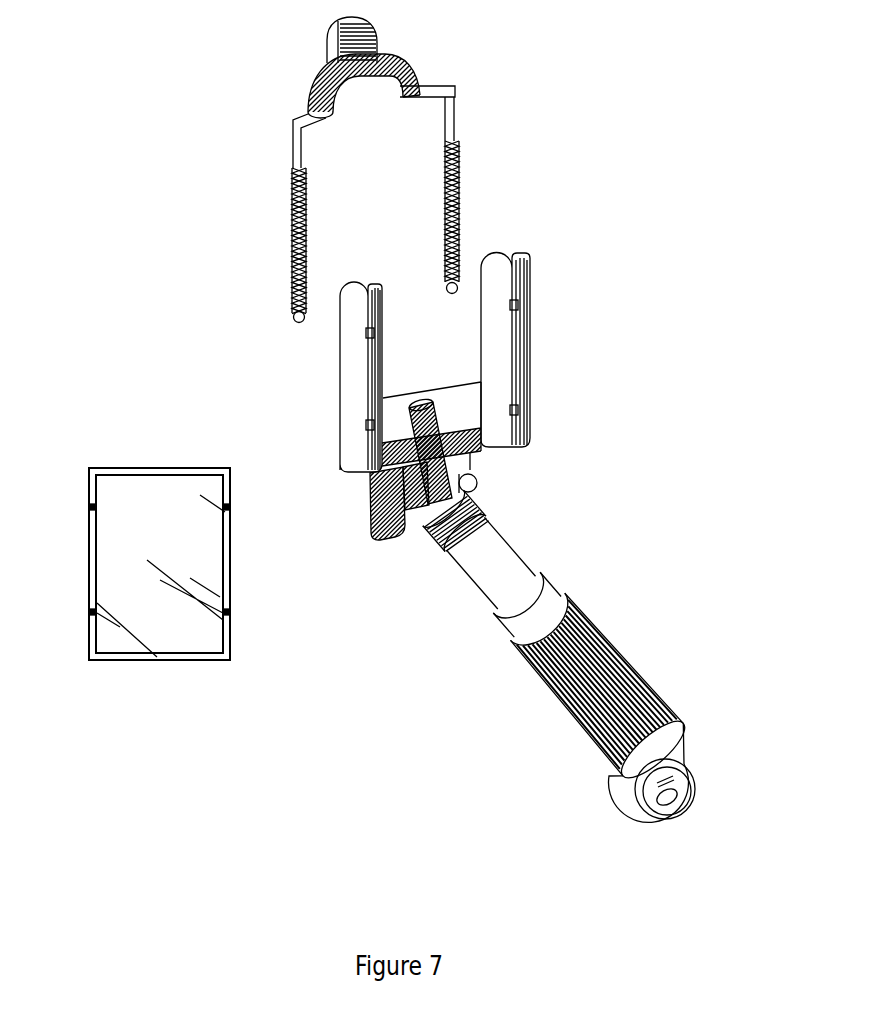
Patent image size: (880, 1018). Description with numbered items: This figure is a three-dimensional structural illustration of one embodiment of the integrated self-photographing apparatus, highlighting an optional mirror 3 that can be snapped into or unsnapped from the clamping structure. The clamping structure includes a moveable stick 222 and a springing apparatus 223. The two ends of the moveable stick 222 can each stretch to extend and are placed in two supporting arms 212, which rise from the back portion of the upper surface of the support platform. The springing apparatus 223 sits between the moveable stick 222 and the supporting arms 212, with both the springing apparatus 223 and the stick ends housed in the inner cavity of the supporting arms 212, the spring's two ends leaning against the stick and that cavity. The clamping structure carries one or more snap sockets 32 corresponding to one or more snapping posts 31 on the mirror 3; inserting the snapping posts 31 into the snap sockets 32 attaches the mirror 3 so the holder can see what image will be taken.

The moveable stick 222 is at (455, 102).
The springing apparatus 223 is at (462, 203).
The supporting arms 212 is at (477, 397).
The snap sockets 32 is at (378, 428).
The mirror 3 is at (199, 536).
The snapping posts 31 is at (215, 500).